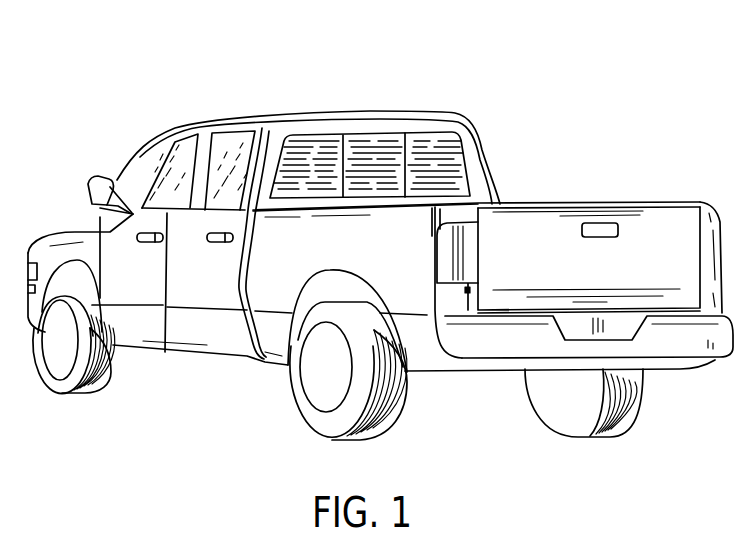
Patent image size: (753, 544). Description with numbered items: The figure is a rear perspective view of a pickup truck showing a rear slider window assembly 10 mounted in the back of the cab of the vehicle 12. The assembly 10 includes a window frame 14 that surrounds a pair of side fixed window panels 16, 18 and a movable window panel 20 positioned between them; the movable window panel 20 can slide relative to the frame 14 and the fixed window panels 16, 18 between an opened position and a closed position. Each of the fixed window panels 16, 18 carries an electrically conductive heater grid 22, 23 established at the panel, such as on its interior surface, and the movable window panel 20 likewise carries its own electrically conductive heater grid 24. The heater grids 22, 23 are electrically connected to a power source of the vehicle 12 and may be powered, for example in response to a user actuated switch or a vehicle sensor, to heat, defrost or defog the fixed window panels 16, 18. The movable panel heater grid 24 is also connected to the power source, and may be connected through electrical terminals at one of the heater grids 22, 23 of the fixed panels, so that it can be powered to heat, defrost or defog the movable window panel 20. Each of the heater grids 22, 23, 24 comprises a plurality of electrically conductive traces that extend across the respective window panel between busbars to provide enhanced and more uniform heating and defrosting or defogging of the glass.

The rear slider window assembly 10 is at (466, 173).
The vehicle 12 is at (187, 93).
The window frame 14 is at (320, 126).
The side fixed window panel 16 is at (288, 148).
The side fixed window panel 18 is at (460, 140).
The movable window panel 20 is at (380, 142).
The heater grid 22 is at (307, 187).
The heater grid 23 is at (435, 150).
The heater grid 24 is at (365, 145).